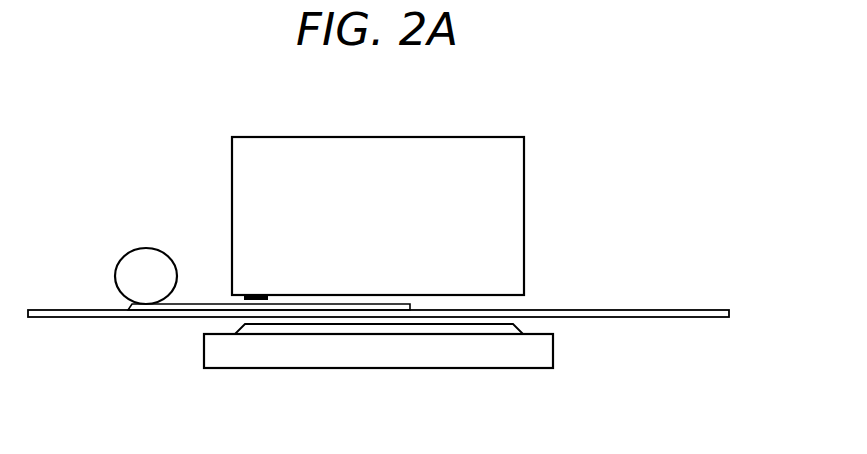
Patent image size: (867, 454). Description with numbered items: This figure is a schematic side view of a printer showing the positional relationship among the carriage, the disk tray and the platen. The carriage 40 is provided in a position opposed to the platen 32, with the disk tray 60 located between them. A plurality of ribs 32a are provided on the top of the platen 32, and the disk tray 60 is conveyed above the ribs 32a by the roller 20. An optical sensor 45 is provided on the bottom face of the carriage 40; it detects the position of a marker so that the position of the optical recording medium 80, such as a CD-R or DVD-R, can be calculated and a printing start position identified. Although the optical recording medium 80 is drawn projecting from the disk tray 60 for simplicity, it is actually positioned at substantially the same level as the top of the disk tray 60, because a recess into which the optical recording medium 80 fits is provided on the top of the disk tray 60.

The roller 20 is at (120, 262).
The optical recording medium 80 is at (187, 303).
The optical sensor 45 is at (244, 298).
The carriage 40 is at (509, 122).
The disk tray 60 is at (588, 310).
The platen 32 is at (472, 385).
The ribs 32a is at (523, 332).